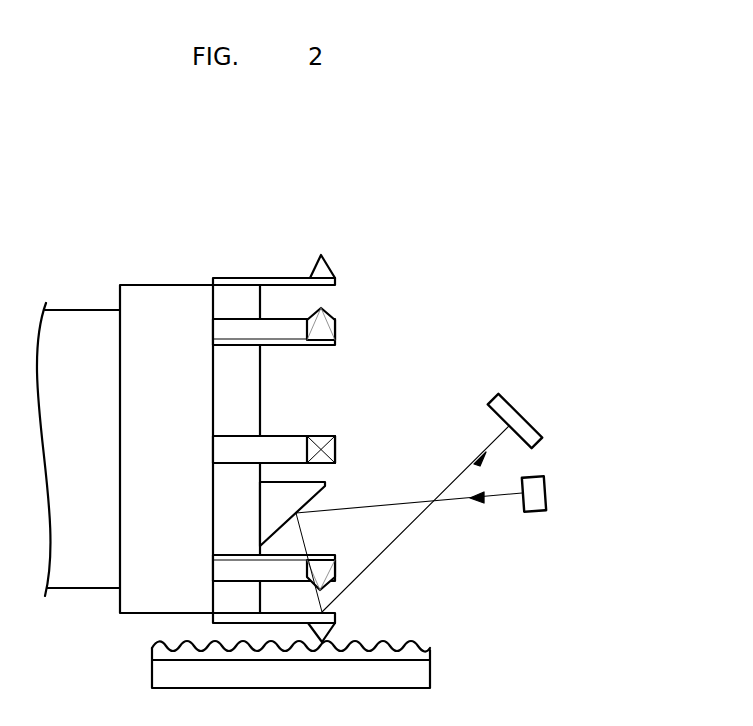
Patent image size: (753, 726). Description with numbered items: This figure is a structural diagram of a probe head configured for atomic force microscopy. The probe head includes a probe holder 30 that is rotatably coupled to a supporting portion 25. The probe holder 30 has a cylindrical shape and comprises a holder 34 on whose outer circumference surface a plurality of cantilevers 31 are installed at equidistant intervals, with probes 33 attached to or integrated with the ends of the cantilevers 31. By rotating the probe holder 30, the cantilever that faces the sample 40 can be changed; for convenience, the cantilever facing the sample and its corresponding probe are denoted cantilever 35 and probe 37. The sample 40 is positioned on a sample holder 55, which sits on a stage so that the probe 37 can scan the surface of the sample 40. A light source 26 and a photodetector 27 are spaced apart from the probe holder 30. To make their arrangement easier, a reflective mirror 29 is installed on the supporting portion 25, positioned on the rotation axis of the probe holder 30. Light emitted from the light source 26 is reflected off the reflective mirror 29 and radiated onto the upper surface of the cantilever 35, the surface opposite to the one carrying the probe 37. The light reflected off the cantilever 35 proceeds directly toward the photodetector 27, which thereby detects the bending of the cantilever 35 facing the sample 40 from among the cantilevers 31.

The supporting portion 25 is at (78, 320).
The light source 26 is at (545, 491).
The photodetector 27 is at (520, 418).
The reflective mirror 29 is at (330, 488).
The probe holder 30 is at (183, 231).
The cantilevers 31 is at (335, 282).
The probes 33 is at (330, 262).
The holder 34 is at (147, 292).
The cantilever facing the sample 35 is at (340, 616).
The probe facing the sample 37 is at (336, 637).
The sample 40 is at (431, 650).
The sample holder 55 is at (432, 675).